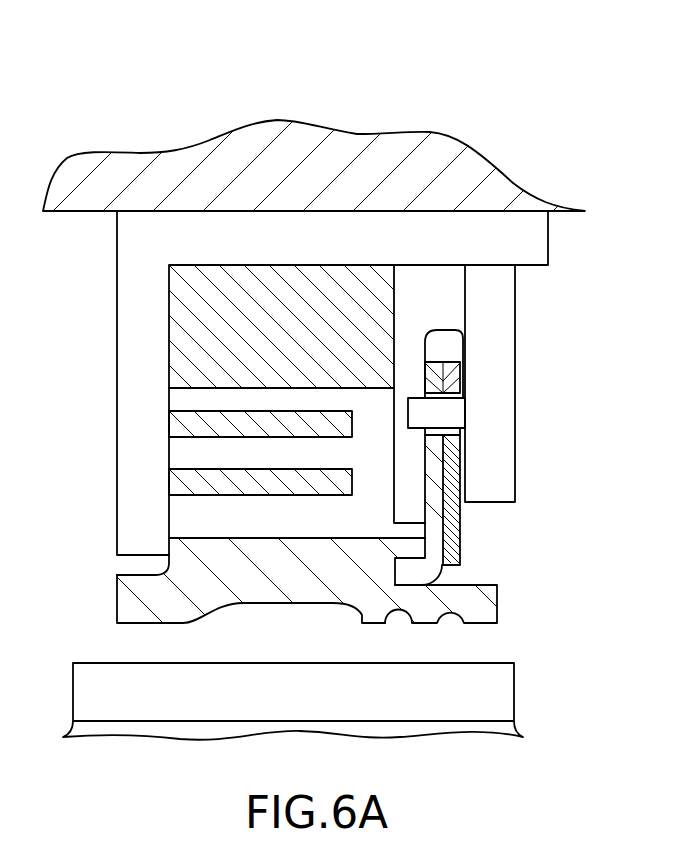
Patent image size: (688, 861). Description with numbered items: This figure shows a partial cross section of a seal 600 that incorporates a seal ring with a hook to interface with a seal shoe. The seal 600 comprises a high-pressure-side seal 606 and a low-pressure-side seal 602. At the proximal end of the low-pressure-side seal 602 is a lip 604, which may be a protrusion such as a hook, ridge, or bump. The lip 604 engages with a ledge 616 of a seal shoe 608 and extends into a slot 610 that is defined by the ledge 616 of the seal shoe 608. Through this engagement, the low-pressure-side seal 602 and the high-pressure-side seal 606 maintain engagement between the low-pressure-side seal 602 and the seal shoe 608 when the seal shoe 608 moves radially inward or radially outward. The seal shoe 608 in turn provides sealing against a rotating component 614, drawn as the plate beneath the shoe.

The seal 600 is at (126, 91).
The low-pressure-side seal 602 is at (430, 463).
The lip 604 is at (395, 566).
The high-pressure-side seal 606 is at (457, 513).
The seal shoe 608 is at (487, 605).
The slot 610 is at (422, 573).
The rotating component 614 is at (503, 690).
The ledge 616 is at (412, 542).